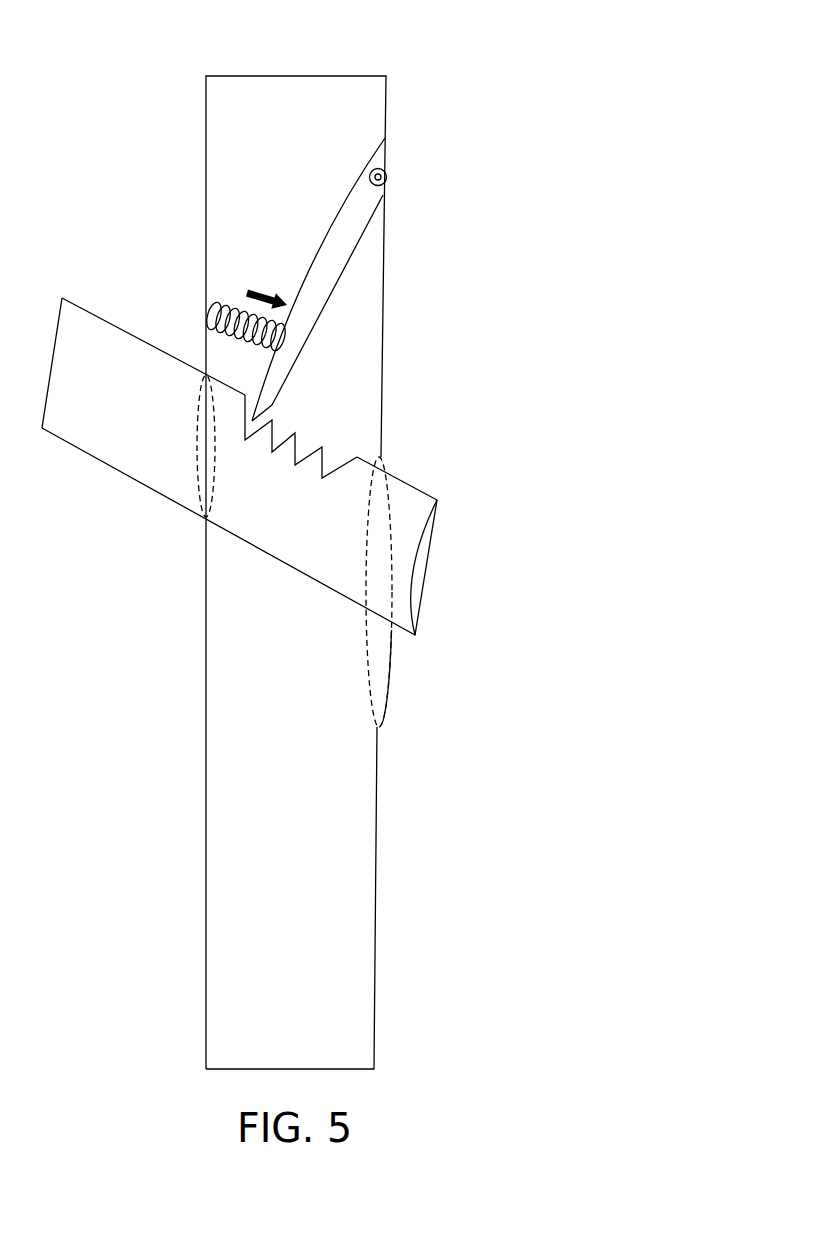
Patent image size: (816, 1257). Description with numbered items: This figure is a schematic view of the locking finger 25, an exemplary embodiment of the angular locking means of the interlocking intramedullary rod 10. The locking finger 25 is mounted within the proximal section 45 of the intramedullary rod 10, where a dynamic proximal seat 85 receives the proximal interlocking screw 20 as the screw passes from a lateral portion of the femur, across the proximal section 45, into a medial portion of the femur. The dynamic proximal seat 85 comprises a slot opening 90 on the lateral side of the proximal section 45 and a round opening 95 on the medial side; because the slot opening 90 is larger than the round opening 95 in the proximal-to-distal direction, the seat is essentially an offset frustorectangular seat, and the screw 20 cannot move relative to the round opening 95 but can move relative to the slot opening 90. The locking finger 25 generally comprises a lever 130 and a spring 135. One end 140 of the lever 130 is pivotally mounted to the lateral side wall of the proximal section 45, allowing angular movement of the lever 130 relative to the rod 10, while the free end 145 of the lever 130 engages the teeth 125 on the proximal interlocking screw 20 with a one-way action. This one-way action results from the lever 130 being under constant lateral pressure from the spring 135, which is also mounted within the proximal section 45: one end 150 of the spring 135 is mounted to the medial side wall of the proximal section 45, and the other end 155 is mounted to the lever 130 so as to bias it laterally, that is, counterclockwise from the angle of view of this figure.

The intramedullary rod 10 is at (560, 178).
The proximal interlocking screw 20 is at (250, 466).
The locking finger 25 is at (300, 240).
The proximal section 45 is at (308, 875).
The dynamic proximal seat 85 is at (405, 687).
The slot opening 90 is at (425, 615).
The round opening 95 is at (203, 477).
The teeth 125 is at (302, 431).
The lever 130 is at (371, 279).
The spring 135 is at (200, 263).
The one end of lever 140 is at (377, 207).
The free end of lever 145 is at (277, 405).
The one end of spring 150 is at (212, 297).
The other end of spring 155 is at (267, 347).